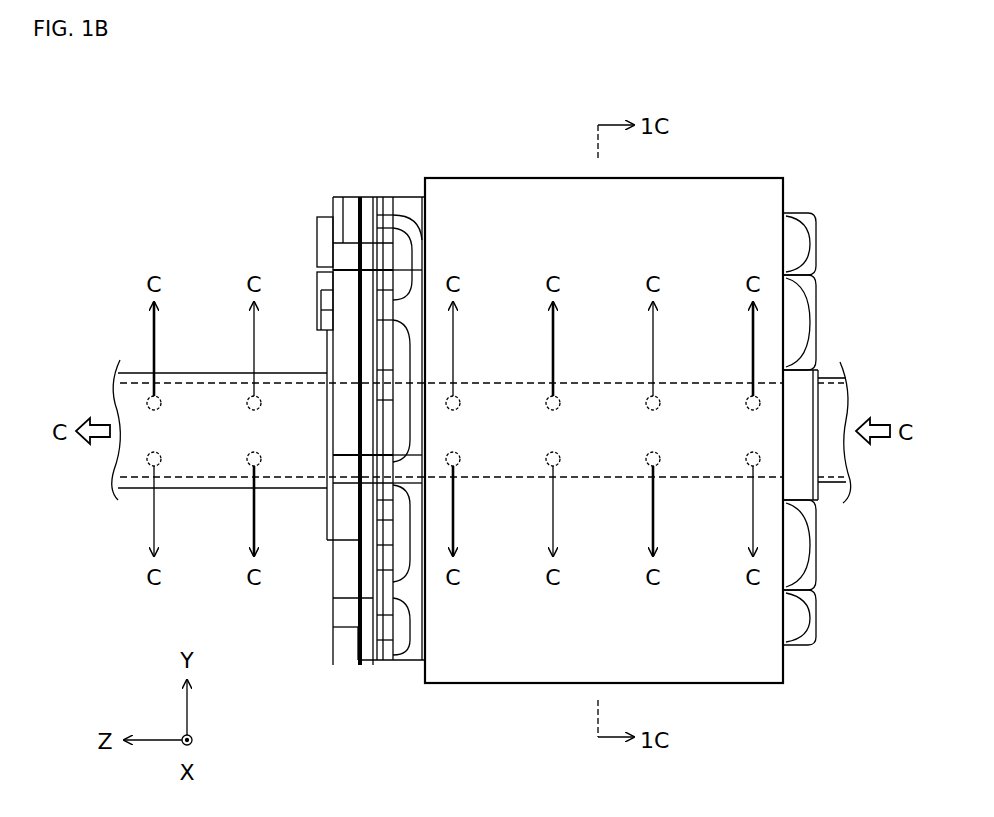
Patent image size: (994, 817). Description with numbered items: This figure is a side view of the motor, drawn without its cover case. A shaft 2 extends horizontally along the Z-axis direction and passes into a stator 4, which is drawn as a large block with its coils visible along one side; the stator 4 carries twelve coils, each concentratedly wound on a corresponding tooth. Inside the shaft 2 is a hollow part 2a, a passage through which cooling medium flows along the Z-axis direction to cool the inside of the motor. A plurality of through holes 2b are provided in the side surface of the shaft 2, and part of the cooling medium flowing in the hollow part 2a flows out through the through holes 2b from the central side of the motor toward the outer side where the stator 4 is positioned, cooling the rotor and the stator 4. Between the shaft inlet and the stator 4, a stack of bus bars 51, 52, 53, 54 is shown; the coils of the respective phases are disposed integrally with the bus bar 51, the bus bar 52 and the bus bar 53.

The shaft 2 is at (128, 375).
The hollow part 2a is at (203, 393).
The through holes 2b is at (250, 466).
The stator 4 is at (452, 190).
The bus bar 51 is at (378, 194).
The bus bar 52 is at (379, 431).
The bus bar 53 is at (385, 428).
The bus bar 54 is at (407, 428).